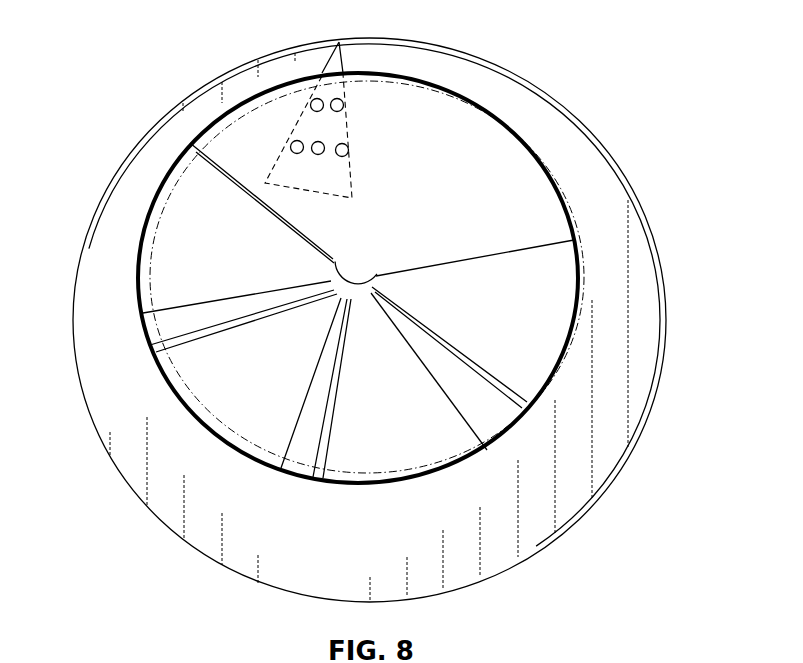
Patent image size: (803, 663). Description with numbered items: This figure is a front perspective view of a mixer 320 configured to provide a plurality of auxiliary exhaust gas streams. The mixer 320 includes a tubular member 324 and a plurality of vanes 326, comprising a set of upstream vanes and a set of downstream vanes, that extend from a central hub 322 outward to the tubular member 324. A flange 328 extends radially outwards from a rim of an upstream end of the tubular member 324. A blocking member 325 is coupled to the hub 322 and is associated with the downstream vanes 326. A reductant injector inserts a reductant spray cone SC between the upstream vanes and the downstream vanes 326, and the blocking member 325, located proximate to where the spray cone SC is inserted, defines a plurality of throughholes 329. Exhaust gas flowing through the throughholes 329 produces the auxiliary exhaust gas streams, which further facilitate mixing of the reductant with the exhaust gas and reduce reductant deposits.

The reductant spray cone SC is at (338, 44).
The mixer 320 is at (547, 163).
The hub 322 is at (380, 277).
The tubular member 324 is at (578, 277).
The blocking member 325 is at (477, 125).
The vanes 326 is at (187, 208).
The flange 328 is at (573, 510).
The throughholes 329 is at (345, 103).